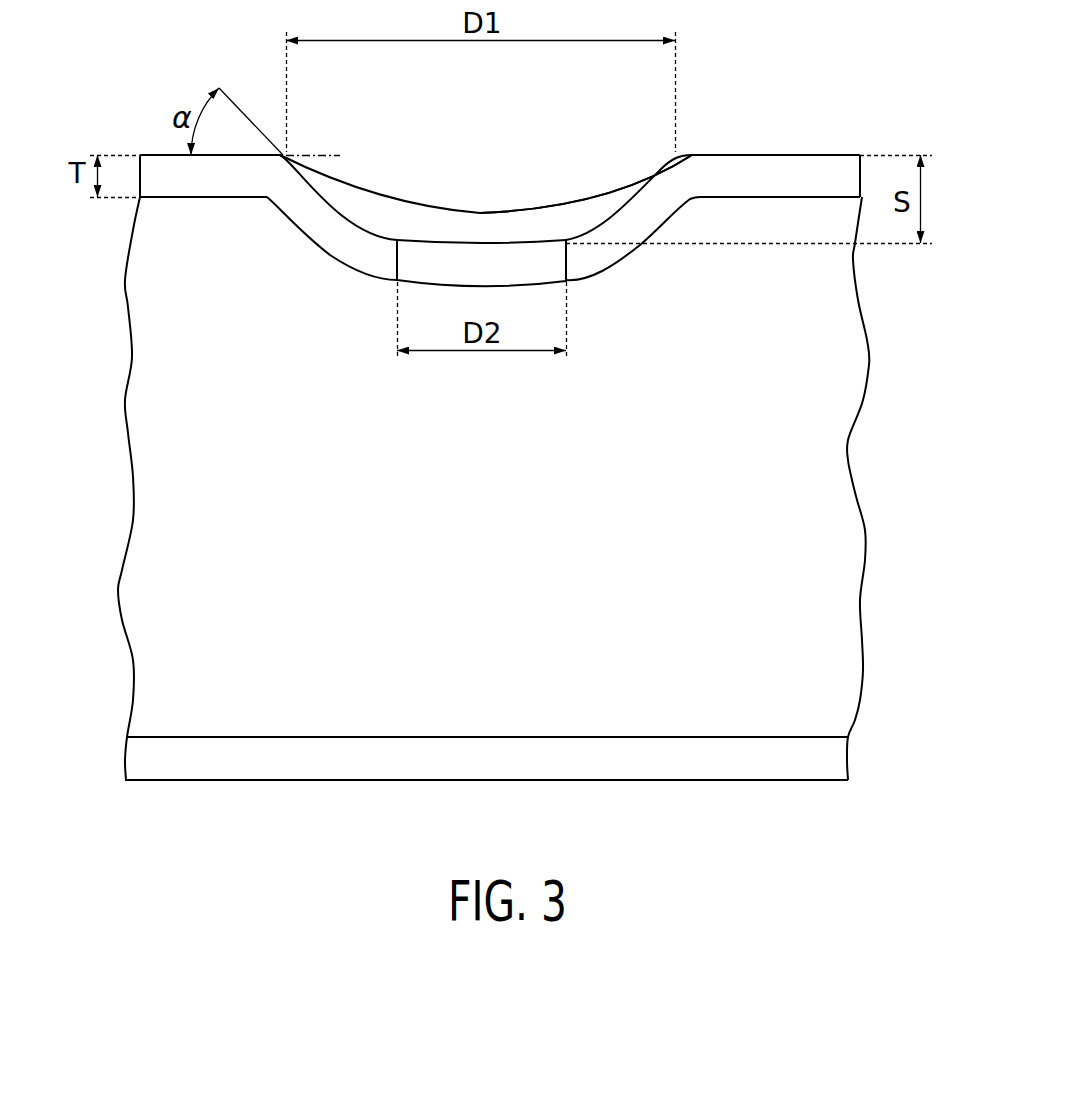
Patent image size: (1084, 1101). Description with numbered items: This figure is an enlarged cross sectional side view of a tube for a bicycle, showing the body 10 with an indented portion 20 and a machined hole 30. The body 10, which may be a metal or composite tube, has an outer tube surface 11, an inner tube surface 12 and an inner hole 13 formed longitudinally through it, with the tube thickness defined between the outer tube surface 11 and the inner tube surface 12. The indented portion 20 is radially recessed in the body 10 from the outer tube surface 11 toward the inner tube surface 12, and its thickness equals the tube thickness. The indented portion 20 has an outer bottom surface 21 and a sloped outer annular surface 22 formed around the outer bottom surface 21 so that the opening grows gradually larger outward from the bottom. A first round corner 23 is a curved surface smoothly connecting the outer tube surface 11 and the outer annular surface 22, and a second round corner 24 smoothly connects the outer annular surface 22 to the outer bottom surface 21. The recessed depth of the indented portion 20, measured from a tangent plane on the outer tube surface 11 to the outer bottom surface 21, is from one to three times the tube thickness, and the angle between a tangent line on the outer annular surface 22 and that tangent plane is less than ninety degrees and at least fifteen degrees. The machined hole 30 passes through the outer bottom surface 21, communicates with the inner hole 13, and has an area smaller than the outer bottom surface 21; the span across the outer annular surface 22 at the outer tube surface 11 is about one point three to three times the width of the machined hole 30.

The body 10 is at (787, 82).
The outer tube surface 11 is at (777, 155).
The inner tube surface 12 is at (183, 198).
The inner hole 13 is at (483, 530).
The indented portion 20 is at (498, 128).
The outer bottom surface 21 is at (395, 238).
The outer annular surface 22 is at (327, 193).
The first round corner 23 is at (675, 163).
The second round corner 24 is at (598, 230).
The machined hole 30 is at (564, 268).